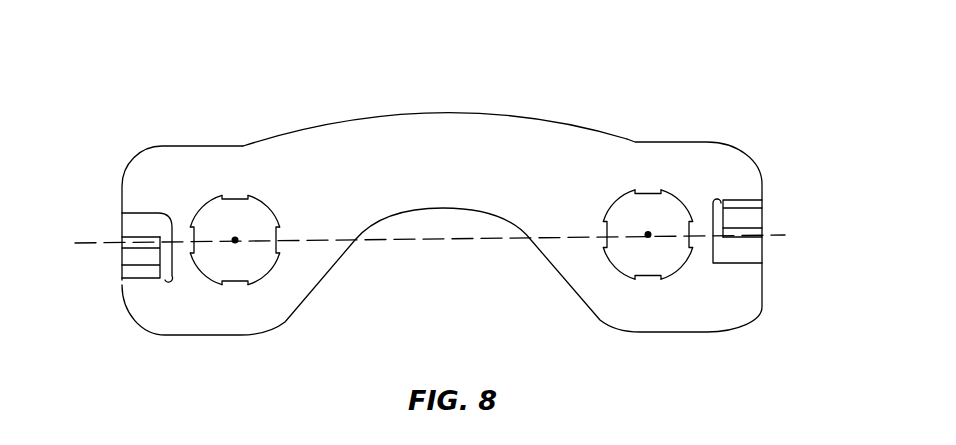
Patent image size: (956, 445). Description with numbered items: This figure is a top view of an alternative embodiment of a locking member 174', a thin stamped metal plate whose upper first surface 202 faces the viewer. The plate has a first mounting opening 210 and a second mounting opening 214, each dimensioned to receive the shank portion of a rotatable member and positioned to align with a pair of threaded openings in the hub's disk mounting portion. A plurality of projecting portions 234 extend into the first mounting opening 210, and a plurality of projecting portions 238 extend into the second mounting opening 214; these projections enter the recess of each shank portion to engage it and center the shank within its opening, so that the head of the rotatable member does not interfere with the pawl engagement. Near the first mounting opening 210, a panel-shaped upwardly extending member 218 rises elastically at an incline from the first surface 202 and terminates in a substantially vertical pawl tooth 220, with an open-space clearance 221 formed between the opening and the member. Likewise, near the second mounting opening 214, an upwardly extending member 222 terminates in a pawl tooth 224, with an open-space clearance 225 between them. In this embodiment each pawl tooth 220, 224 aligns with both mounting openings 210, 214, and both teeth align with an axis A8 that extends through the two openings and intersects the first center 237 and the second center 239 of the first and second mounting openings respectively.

The locking member 174' is at (442, 186).
The first surface 202 is at (487, 137).
The first mounting opening 210 is at (254, 212).
The second mounting opening 214 is at (630, 208).
The projecting portions 234 is at (235, 199).
The projecting portions 238 is at (648, 193).
The first center 237 is at (235, 245).
The second center 239 is at (648, 240).
The upwardly extending member 218 is at (122, 253).
The pawl tooth 220 is at (130, 239).
The open-space clearance 221 is at (170, 285).
The upwardly extending member 222 is at (762, 217).
The pawl tooth 224 is at (763, 236).
The open-space clearance 225 is at (720, 203).
The axis A8 is at (437, 237).